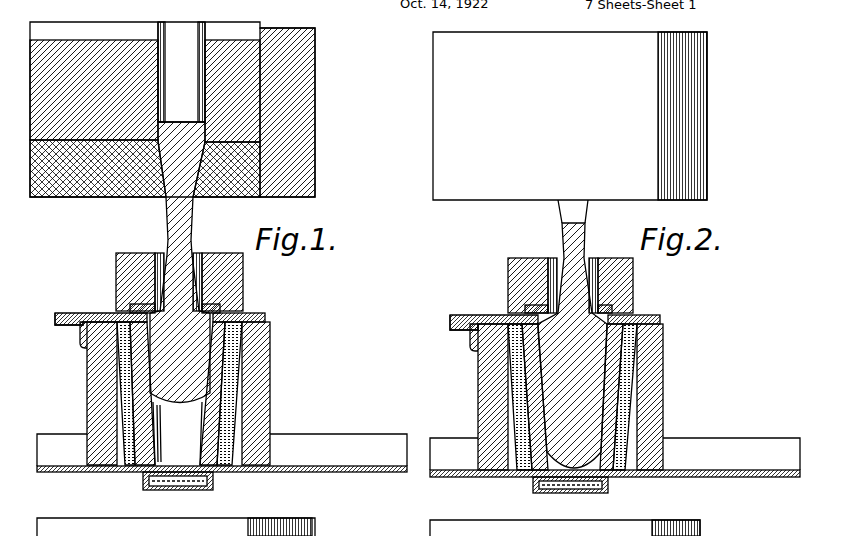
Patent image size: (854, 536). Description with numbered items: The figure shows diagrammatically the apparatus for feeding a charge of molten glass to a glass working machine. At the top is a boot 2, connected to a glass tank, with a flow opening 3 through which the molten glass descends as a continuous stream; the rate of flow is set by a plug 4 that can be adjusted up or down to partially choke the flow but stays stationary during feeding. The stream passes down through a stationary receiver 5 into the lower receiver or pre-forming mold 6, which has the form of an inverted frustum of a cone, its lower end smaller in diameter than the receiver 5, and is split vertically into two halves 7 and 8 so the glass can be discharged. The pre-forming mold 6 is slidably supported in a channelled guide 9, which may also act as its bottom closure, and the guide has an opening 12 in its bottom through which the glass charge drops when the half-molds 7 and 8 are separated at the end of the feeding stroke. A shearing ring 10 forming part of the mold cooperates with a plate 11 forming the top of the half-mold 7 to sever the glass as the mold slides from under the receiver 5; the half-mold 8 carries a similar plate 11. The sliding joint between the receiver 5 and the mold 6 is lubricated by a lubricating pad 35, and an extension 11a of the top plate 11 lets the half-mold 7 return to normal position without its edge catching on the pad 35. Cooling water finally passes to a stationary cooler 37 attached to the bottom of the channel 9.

In FIG. 1, the boot 2 is at (316, 98).
In FIG. 2, the boot 2 is at (570, 116).
In FIG. 1, the flow opening 3 is at (162, 177).
In FIG. 2, the flow opening 3 is at (572, 334).
In FIG. 1, the plug 4 is at (181, 72).
In FIG. 1, the stationary receiver 5 is at (226, 258).
In FIG. 2, the stationary receiver 5 is at (525, 258).
In FIG. 1, the pre-forming mold 6 is at (177, 393).
In FIG. 2, the pre-forming mold 6 is at (612, 338).
In FIG. 1, the half mold 7 is at (87, 390).
In FIG. 2, the half mold 7 is at (478, 385).
In FIG. 1, the half mold 8 is at (270, 387).
In FIG. 2, the half mold 8 is at (665, 388).
In FIG. 1, the channelled guide 9 is at (222, 450).
In FIG. 2, the channelled guide 9 is at (615, 454).
In FIG. 1, the shearing ring 10 is at (220, 306).
In FIG. 2, the shearing ring 10 is at (545, 310).
In FIG. 1, the plate 11 is at (101, 313).
In FIG. 2, the plate 11 is at (655, 310).
In FIG. 1, the extension 11a is at (63, 306).
In FIG. 2, the extension 11a is at (461, 310).
In FIG. 1, the opening 12 is at (299, 473).
In FIG. 2, the opening 12 is at (694, 478).
In FIG. 1, the lubricating pad 35 is at (131, 306).
In FIG. 2, the lubricating pad 35 is at (525, 310).
In FIG. 1, the stationary cooler 37 is at (190, 490).
In FIG. 2, the stationary cooler 37 is at (575, 493).